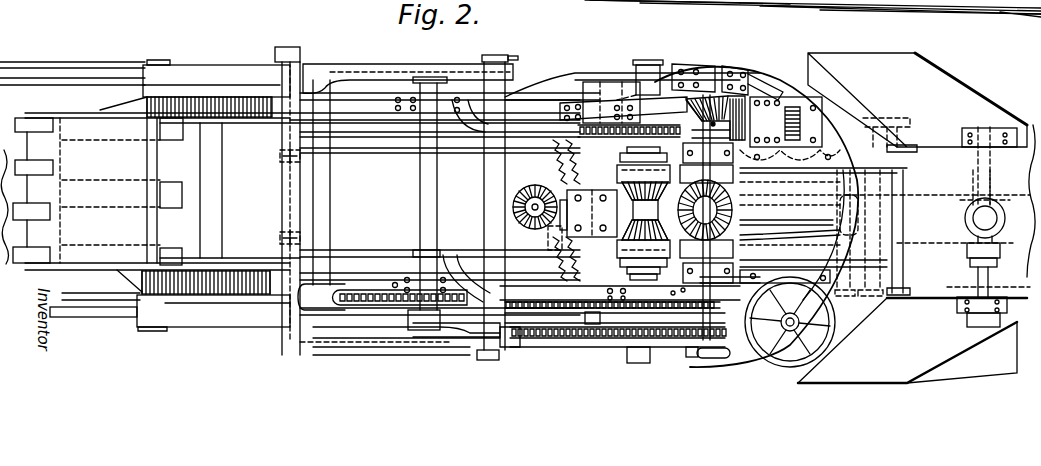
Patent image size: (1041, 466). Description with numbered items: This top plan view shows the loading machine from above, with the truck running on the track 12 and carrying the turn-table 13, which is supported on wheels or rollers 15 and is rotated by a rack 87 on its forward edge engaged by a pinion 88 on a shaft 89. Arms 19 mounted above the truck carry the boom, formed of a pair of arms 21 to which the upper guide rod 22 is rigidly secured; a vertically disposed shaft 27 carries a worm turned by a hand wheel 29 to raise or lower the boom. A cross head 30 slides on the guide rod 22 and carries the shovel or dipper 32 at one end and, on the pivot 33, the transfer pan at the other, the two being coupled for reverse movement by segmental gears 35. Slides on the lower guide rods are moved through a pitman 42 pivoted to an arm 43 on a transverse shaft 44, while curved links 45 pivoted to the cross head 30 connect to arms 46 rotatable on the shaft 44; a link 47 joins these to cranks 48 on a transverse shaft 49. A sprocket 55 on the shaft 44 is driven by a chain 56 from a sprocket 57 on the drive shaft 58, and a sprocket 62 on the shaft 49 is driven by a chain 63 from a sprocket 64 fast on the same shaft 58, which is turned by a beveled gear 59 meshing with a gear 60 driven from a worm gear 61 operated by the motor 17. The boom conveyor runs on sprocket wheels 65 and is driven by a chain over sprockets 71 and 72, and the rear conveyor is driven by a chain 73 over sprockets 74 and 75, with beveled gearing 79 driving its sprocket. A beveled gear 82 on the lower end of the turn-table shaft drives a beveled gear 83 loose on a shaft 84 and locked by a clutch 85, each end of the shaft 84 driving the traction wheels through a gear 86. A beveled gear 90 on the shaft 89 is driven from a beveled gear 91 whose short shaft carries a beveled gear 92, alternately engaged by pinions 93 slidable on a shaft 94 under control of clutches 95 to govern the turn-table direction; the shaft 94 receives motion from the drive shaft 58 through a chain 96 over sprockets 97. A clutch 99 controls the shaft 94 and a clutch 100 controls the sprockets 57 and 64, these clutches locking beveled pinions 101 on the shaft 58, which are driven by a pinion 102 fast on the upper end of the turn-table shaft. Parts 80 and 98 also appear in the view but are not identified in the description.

The track 12 is at (890, 7).
The turn-table 13 is at (798, 98).
The wheels or rollers 15 is at (760, 75).
The motor 17 is at (910, 170).
The arms 19 is at (533, 100).
The boom arms 21 is at (92, 80).
The upper guide rod 22 is at (48, 63).
The vertically disposed shaft 27 is at (797, 332).
The hand wheel 29 is at (788, 368).
The cross head 30 is at (177, 65).
The shovel or dipper 32 is at (112, 158).
The pivot 33 is at (290, 47).
The segmental gears 35 is at (230, 97).
The pitman 42 is at (466, 354).
The arm 43 is at (437, 338).
The transverse shaft 44 is at (420, 205).
The curved link 45 is at (403, 68).
The arms 46 is at (473, 118).
The link 47 is at (528, 62).
The cranks 48 is at (634, 66).
The transverse shaft 49 is at (597, 82).
The sprocket 55 is at (360, 290).
The chain 56 is at (520, 296).
The sprocket 57 is at (687, 320).
The drive shaft 58 is at (745, 224).
The beveled gear 59 is at (688, 95).
The gear 60 is at (733, 95).
The worm gear 61 is at (830, 89).
The sprocket 62 is at (588, 343).
The chain 63 is at (628, 358).
The sprocket 64 is at (692, 357).
The sprocket wheels 65 is at (278, 155).
The sprocket 71 is at (742, 281).
The sprocket 72 is at (855, 330).
The chain 73 is at (954, 199).
The sprocket 74 is at (593, 0).
The sprocket 75 is at (1003, 208).
The beveled gearing 79 is at (973, 218).
The bracket 80 is at (971, 245).
The beveled gear 82 is at (641, 2).
The beveled gear 83 is at (686, 3).
The shaft 84 is at (772, 5).
The clutch 85 is at (731, 6).
The gear 86 is at (578, 0).
The rack 87 is at (556, 178).
The pinion 88 is at (548, 228).
The shaft 89 is at (512, 207).
The beveled gear 90 is at (515, 196).
The beveled gear 91 is at (553, 246).
The beveled gear 92 is at (642, 208).
The pinions 93 is at (612, 186).
The shaft 94 is at (642, 222).
The clutches 95 is at (628, 157).
The chain 96 is at (693, 146).
The sprockets 97 is at (666, 116).
The bevel gear 98 is at (711, 123).
The clutch 99 is at (748, 183).
The clutch 100 is at (690, 266).
The beveled pinions 101 is at (682, 187).
The pinion 102 is at (748, 205).